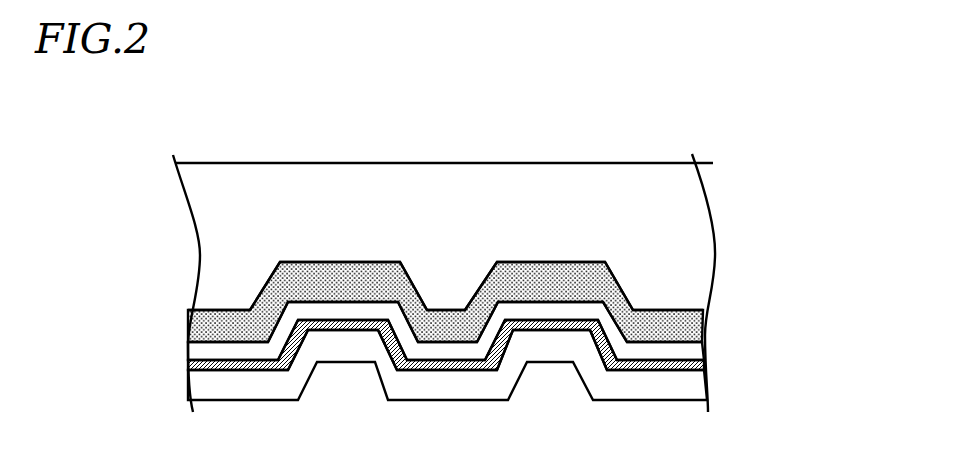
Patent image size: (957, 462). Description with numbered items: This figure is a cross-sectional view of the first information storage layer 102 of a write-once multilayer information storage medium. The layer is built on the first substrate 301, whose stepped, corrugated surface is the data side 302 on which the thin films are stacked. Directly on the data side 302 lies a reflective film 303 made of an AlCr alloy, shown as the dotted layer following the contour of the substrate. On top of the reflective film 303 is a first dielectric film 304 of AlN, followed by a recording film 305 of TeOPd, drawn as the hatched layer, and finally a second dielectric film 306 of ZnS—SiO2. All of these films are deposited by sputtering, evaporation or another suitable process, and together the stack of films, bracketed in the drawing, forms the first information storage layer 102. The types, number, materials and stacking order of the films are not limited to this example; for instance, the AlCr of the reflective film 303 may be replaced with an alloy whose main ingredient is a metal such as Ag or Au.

The first information storage layer 102 is at (532, 347).
The first substrate 301 is at (663, 251).
The data side 302 is at (653, 310).
The reflective film 303 is at (673, 320).
The first dielectric film 304 is at (693, 352).
The recording film 305 is at (701, 368).
The second dielectric film 306 is at (603, 382).